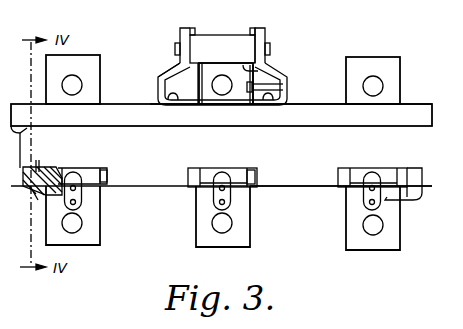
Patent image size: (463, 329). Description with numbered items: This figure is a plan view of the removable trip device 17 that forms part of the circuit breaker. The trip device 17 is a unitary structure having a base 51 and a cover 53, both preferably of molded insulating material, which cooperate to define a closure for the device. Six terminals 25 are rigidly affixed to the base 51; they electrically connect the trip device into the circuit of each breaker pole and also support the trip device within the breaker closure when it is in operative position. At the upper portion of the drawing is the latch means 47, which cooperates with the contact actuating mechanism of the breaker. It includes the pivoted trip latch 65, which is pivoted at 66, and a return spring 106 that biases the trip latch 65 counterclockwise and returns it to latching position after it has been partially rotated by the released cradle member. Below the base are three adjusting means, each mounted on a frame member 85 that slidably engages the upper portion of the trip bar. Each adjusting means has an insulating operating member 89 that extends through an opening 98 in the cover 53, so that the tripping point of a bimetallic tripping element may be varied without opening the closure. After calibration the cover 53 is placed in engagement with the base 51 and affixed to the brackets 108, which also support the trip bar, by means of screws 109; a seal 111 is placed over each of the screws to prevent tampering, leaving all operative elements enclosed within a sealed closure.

The trip device 17 is at (160, 155).
The terminals 25 is at (90, 68).
The latch means 47 is at (305, 58).
The base 51 is at (300, 108).
The cover 53 is at (304, 181).
The trip latch 65 is at (228, 40).
The pivot of the trip latch 66 is at (178, 50).
The frame member 85 is at (85, 172).
The operating member 89 is at (71, 171).
The opening 98 is at (107, 176).
The return spring 106 is at (197, 82).
The brackets 108 is at (22, 186).
The screws 109 is at (40, 166).
The seal 111 is at (35, 200).